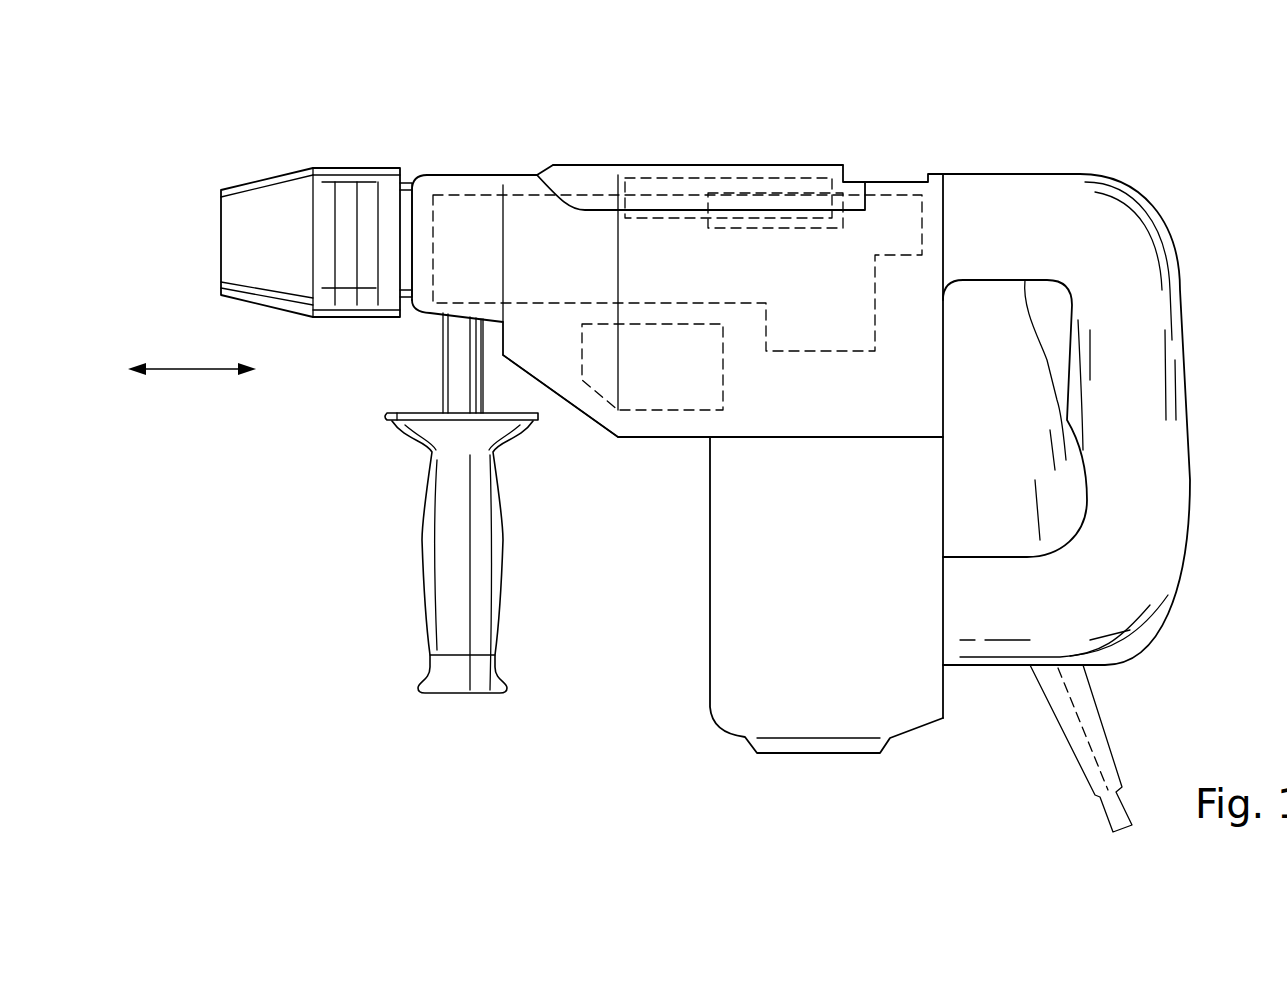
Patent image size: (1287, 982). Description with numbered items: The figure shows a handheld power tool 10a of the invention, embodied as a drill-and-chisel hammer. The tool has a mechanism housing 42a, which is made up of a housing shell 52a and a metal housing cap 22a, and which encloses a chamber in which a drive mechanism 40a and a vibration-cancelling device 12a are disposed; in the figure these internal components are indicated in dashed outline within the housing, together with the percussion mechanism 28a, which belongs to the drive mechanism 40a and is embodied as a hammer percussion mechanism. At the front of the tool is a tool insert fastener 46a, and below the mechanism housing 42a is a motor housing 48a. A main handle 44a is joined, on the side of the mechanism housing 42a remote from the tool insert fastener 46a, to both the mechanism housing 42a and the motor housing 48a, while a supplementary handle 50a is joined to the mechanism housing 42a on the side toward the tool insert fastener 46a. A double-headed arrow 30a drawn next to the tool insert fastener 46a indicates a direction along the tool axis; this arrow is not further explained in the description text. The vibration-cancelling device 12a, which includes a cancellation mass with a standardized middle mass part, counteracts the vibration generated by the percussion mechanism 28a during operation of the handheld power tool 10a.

The handheld power tool 10a is at (426, 108).
The vibration-cancelling device 12a is at (683, 178).
The metal housing cap 22a is at (590, 165).
The percussion mechanism 28a is at (482, 195).
The working direction 30a is at (190, 372).
The drive mechanism 40a is at (658, 413).
The mechanism housing 42a is at (588, 492).
The main handle 44a is at (1030, 174).
The tool insert fastener 46a is at (265, 178).
The motor housing 48a is at (910, 710).
The supplementary handle 50a is at (432, 558).
The housing shell 52a is at (925, 393).